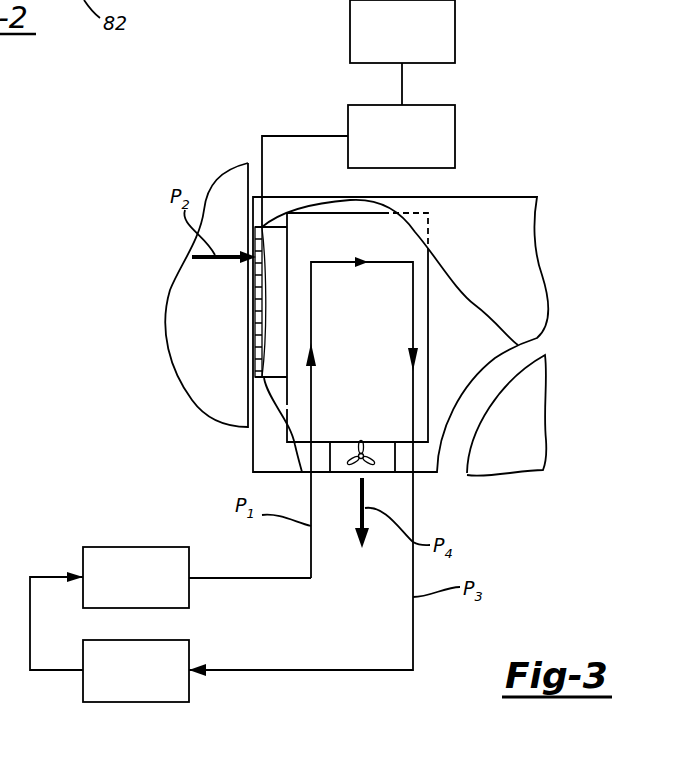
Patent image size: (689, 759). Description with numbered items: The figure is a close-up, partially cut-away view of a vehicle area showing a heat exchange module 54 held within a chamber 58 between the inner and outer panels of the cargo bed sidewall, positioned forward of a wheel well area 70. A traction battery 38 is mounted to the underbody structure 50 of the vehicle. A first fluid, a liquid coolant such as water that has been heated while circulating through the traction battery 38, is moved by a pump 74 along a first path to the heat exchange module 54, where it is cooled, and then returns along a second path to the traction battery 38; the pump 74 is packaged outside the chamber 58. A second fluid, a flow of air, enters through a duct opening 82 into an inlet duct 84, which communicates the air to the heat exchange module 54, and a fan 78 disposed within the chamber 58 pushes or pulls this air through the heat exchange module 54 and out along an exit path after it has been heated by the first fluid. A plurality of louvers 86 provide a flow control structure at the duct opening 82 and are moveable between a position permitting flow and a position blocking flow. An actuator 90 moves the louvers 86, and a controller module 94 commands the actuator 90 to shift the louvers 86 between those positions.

The traction battery 38 is at (83, 553).
The underbody structure 50 is at (262, 483).
The heat exchange module 54 is at (428, 388).
The chamber 58 is at (472, 334).
The wheel well area 70 is at (502, 383).
The pump 74 is at (83, 697).
The fan 78 is at (395, 458).
The duct opening 82 is at (250, 338).
The inlet duct 84 is at (266, 226).
The louvers 86 is at (262, 309).
The actuator 90 is at (455, 137).
The controller module 94 is at (455, 32).